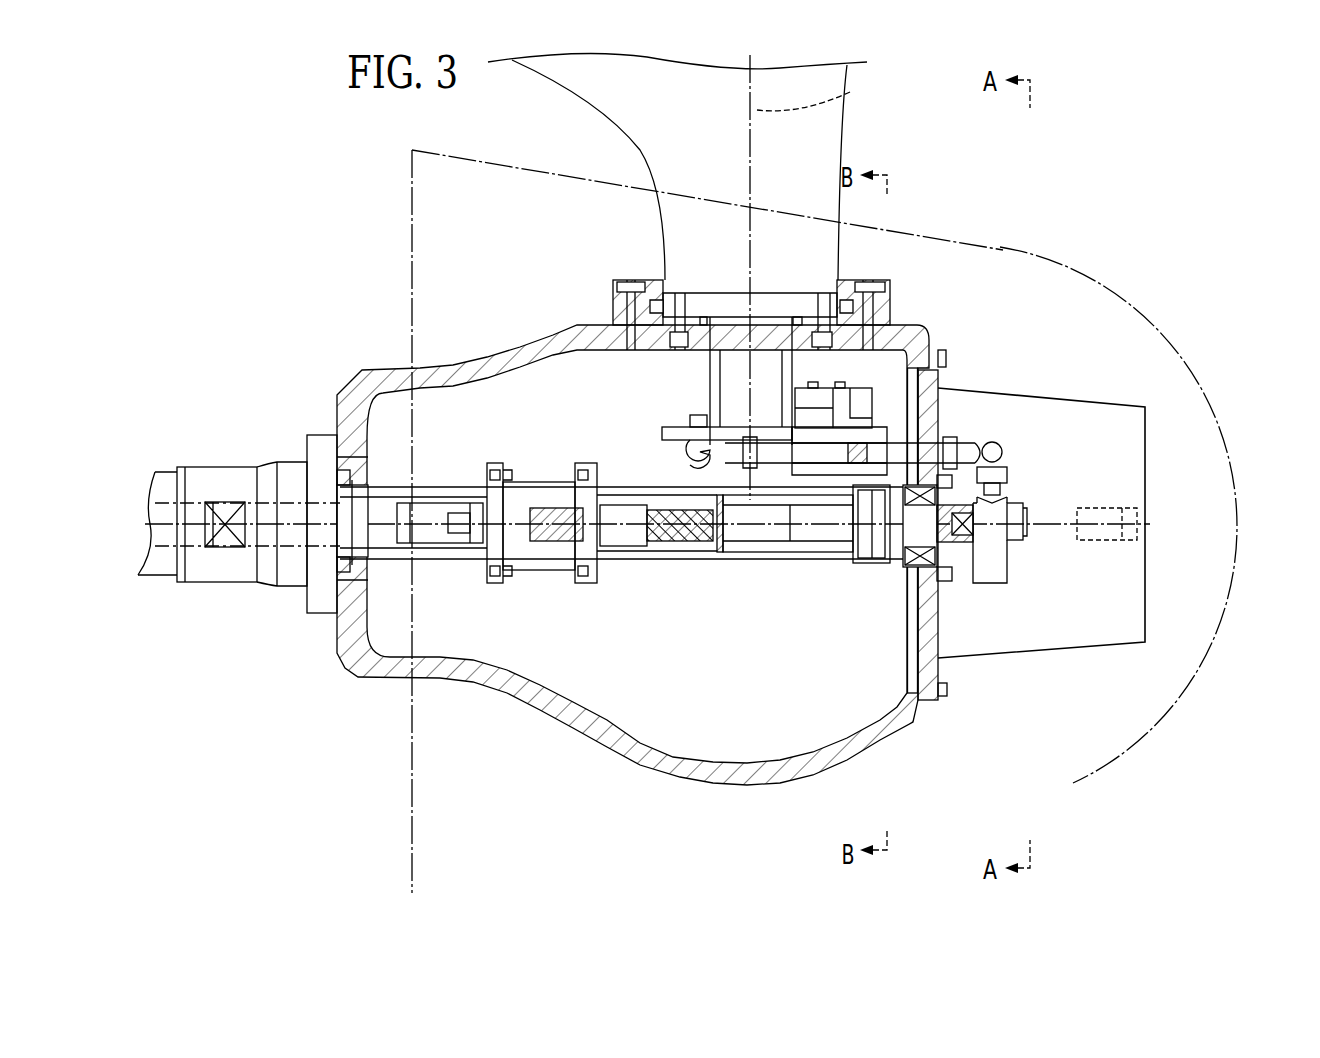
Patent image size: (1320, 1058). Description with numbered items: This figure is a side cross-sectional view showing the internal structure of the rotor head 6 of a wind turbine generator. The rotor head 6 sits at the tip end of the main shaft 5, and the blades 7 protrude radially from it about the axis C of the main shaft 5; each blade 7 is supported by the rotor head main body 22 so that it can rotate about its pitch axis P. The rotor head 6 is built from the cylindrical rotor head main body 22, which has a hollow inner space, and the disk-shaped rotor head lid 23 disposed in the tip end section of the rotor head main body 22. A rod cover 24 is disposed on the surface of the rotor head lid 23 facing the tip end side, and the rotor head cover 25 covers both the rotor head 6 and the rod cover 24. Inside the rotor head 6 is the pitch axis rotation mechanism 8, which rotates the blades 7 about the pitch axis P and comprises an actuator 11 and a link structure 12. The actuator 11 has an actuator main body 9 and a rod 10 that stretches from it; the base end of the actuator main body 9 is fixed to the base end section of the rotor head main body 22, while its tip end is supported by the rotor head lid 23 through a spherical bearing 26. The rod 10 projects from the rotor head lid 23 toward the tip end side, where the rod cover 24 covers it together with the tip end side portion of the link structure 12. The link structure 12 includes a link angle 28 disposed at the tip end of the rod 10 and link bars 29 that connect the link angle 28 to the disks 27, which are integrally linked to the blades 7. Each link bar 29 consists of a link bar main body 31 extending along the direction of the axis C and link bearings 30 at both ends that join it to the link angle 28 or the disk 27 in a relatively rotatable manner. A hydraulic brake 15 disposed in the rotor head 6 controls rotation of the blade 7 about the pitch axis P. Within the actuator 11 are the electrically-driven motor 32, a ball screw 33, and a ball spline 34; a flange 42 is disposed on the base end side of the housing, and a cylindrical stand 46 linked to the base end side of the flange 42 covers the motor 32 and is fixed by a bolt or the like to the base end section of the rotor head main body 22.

The main shaft 5 is at (205, 470).
The rotor head 6 is at (633, 520).
The blade 7 is at (820, 120).
The pitch axis rotation mechanism 8 is at (622, 544).
The actuator main body 9 is at (965, 560).
The rod 10 is at (1103, 552).
The actuator 11 is at (1020, 629).
The link structure 12 is at (985, 430).
The hydraulic brake 15 is at (878, 392).
The rotor head main body 22 is at (527, 347).
The rotor head lid 23 is at (928, 500).
The rod cover 24 is at (1070, 395).
The rotor head cover 25 is at (1000, 258).
The spherical bearing 26 is at (905, 568).
The disk 27 is at (668, 428).
The link angle 28 is at (1005, 567).
The link bar 29 is at (892, 432).
The link bearing 30 is at (690, 456).
The link bar main body 31 is at (775, 462).
The electrically-driven motor 32 is at (437, 527).
The ball screw 33 is at (648, 555).
The ball spline 34 is at (800, 553).
The flange 42 is at (592, 465).
The stand 46 is at (478, 480).
The pitch axis P is at (790, 100).
The axis C is at (1218, 400).